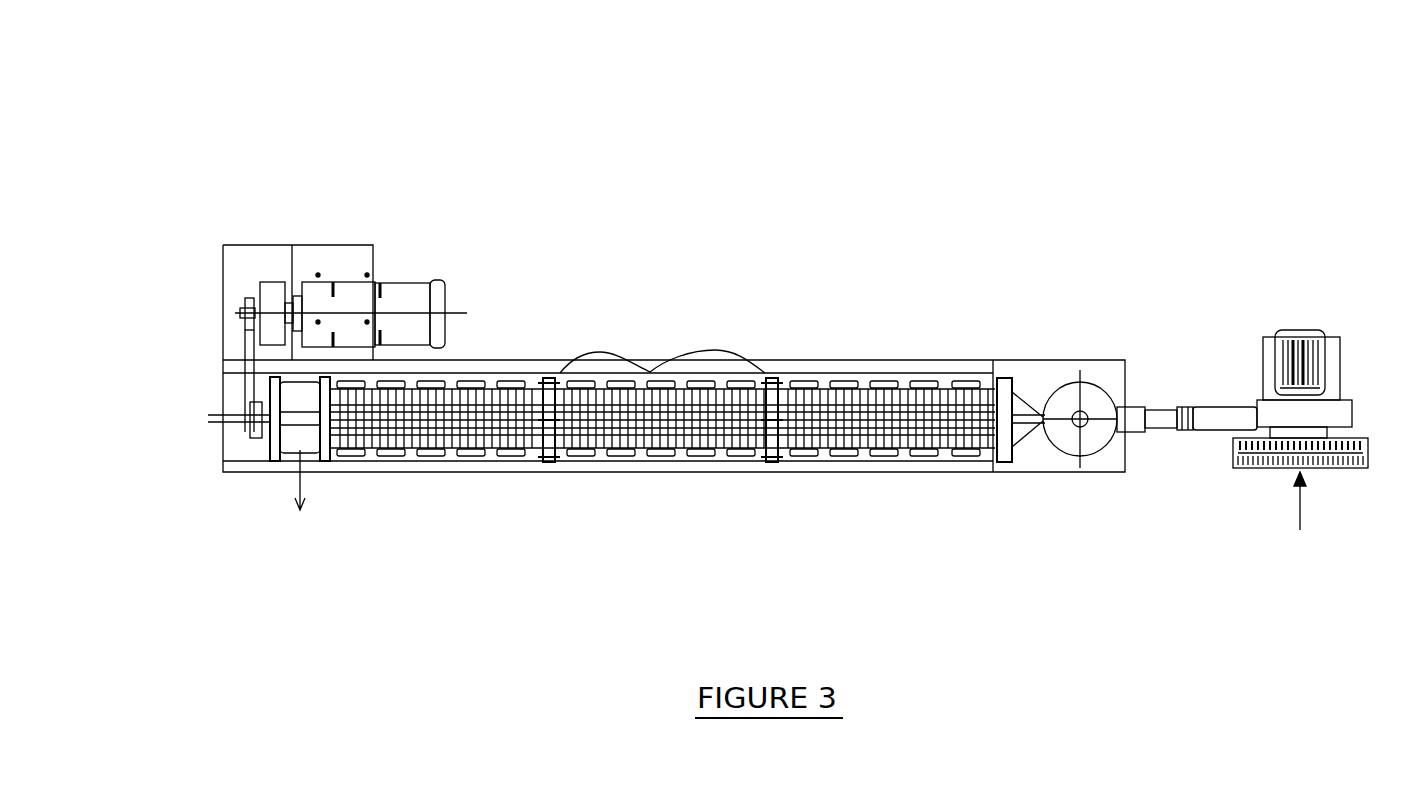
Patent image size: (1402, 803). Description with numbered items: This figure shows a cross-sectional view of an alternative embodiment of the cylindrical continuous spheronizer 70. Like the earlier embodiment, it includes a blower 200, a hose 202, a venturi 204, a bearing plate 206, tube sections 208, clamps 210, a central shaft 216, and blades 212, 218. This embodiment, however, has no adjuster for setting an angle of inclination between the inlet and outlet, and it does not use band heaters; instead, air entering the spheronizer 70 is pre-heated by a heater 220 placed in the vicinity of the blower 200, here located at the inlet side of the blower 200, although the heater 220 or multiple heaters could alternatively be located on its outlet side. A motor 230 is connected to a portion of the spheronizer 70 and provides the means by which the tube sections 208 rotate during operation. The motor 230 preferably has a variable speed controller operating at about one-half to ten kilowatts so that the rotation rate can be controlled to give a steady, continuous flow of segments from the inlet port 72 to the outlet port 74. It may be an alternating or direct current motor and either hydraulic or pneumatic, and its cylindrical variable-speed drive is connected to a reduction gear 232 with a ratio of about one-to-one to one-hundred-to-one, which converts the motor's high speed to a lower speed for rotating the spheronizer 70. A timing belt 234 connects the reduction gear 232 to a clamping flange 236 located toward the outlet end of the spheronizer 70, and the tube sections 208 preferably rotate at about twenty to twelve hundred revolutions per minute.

The spheronizer 70 is at (652, 222).
The inlet port 72 is at (1042, 370).
The outlet port 74 is at (307, 455).
The blower 200 is at (1293, 330).
The hose 202 is at (1223, 407).
The venturi 204 is at (1137, 408).
The bearing plate 206 is at (998, 450).
The tube sections 208 is at (658, 358).
The clamps 210 is at (548, 380).
The blades 212 is at (902, 445).
The central shaft 216 is at (483, 440).
The blades 218 is at (740, 430).
The heater 220 is at (1233, 470).
The motor 230 is at (350, 297).
The reduction gear 232 is at (263, 283).
The timing belt 234 is at (243, 383).
The clamping flange 236 is at (253, 432).